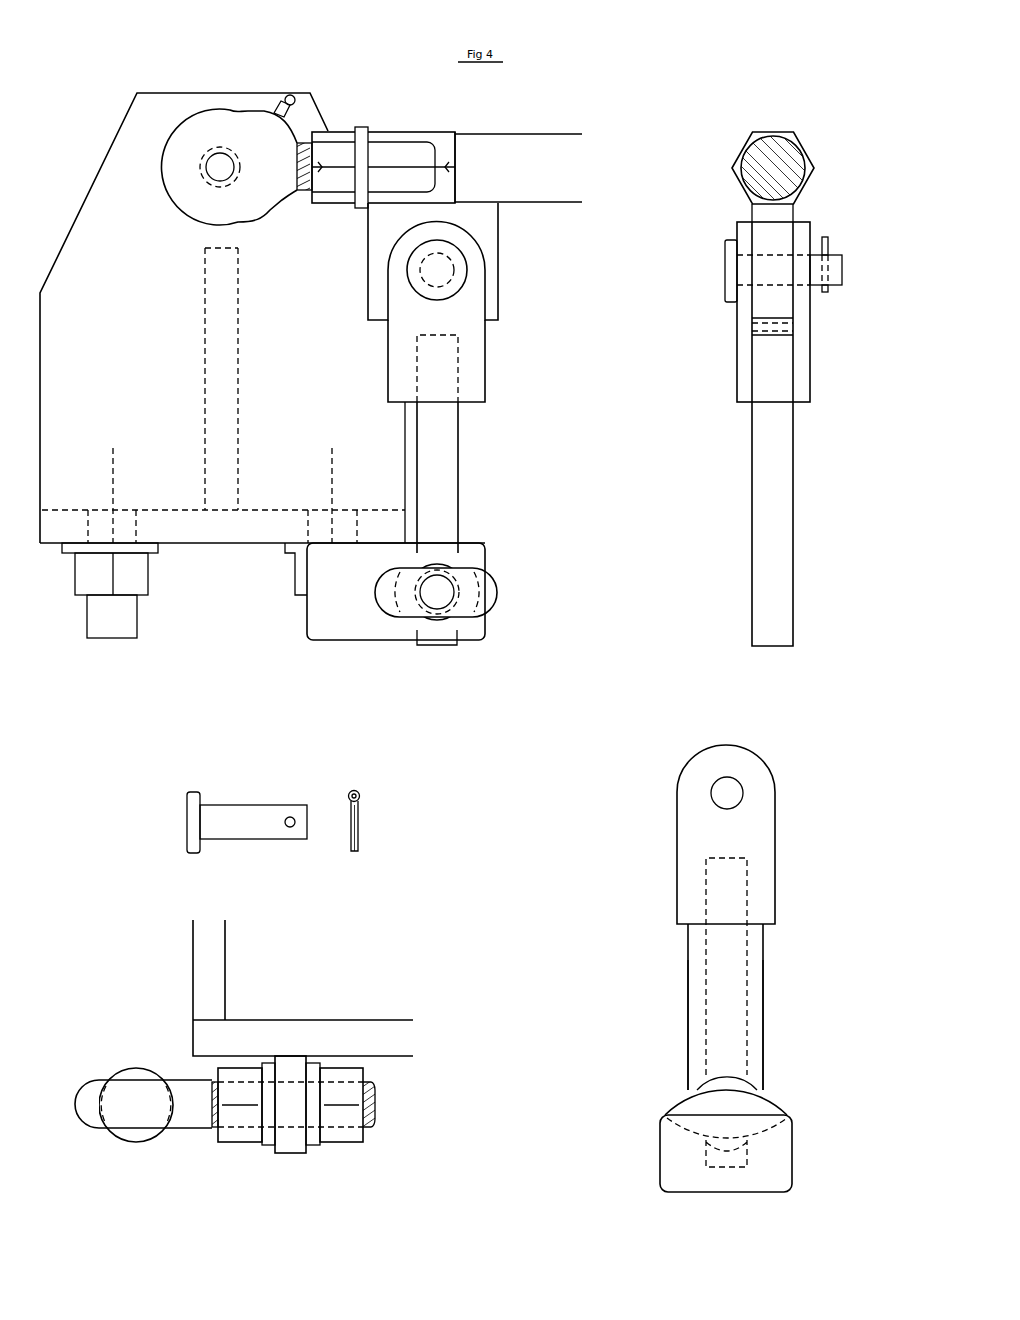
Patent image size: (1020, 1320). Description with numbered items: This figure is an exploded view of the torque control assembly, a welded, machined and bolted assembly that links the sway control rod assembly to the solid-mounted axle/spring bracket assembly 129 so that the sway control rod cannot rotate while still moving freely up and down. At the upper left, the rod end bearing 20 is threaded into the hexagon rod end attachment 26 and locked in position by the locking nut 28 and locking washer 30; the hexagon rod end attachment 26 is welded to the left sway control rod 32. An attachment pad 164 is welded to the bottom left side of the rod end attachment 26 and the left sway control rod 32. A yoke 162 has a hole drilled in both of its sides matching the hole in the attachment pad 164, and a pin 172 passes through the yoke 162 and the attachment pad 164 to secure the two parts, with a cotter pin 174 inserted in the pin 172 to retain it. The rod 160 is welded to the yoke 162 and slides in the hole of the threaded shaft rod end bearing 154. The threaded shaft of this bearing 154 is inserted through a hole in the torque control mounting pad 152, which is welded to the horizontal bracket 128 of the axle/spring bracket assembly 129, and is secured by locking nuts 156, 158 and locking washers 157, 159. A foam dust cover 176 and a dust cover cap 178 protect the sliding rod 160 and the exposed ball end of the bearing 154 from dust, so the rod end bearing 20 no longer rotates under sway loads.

The rod end bearing 20 is at (217, 128).
The axle/spring bracket assembly 129 is at (110, 145).
The locking nut 28 is at (333, 135).
The locking washer 30 is at (363, 137).
The hexagon rod end attachment 26 is at (427, 135).
The left sway control rod 32 is at (496, 148).
The pin 172 is at (462, 263).
The attachment pad 164 is at (490, 305).
The yoke 162 is at (475, 378).
The rod 160 is at (447, 467).
The threaded shaft rod end bearing 154 is at (487, 588).
The torque control assembly mounting pad 152 is at (358, 630).
The bracket 128 is at (298, 475).
The cotter pin 174 is at (826, 238).
The locking nut 158 is at (238, 1135).
The locking washer 159 is at (267, 1135).
The locking washer 157 is at (313, 1140).
The locking nut 156 is at (350, 1135).
The foam dust cover 176 is at (760, 975).
The dust cover cap 178 is at (670, 1170).